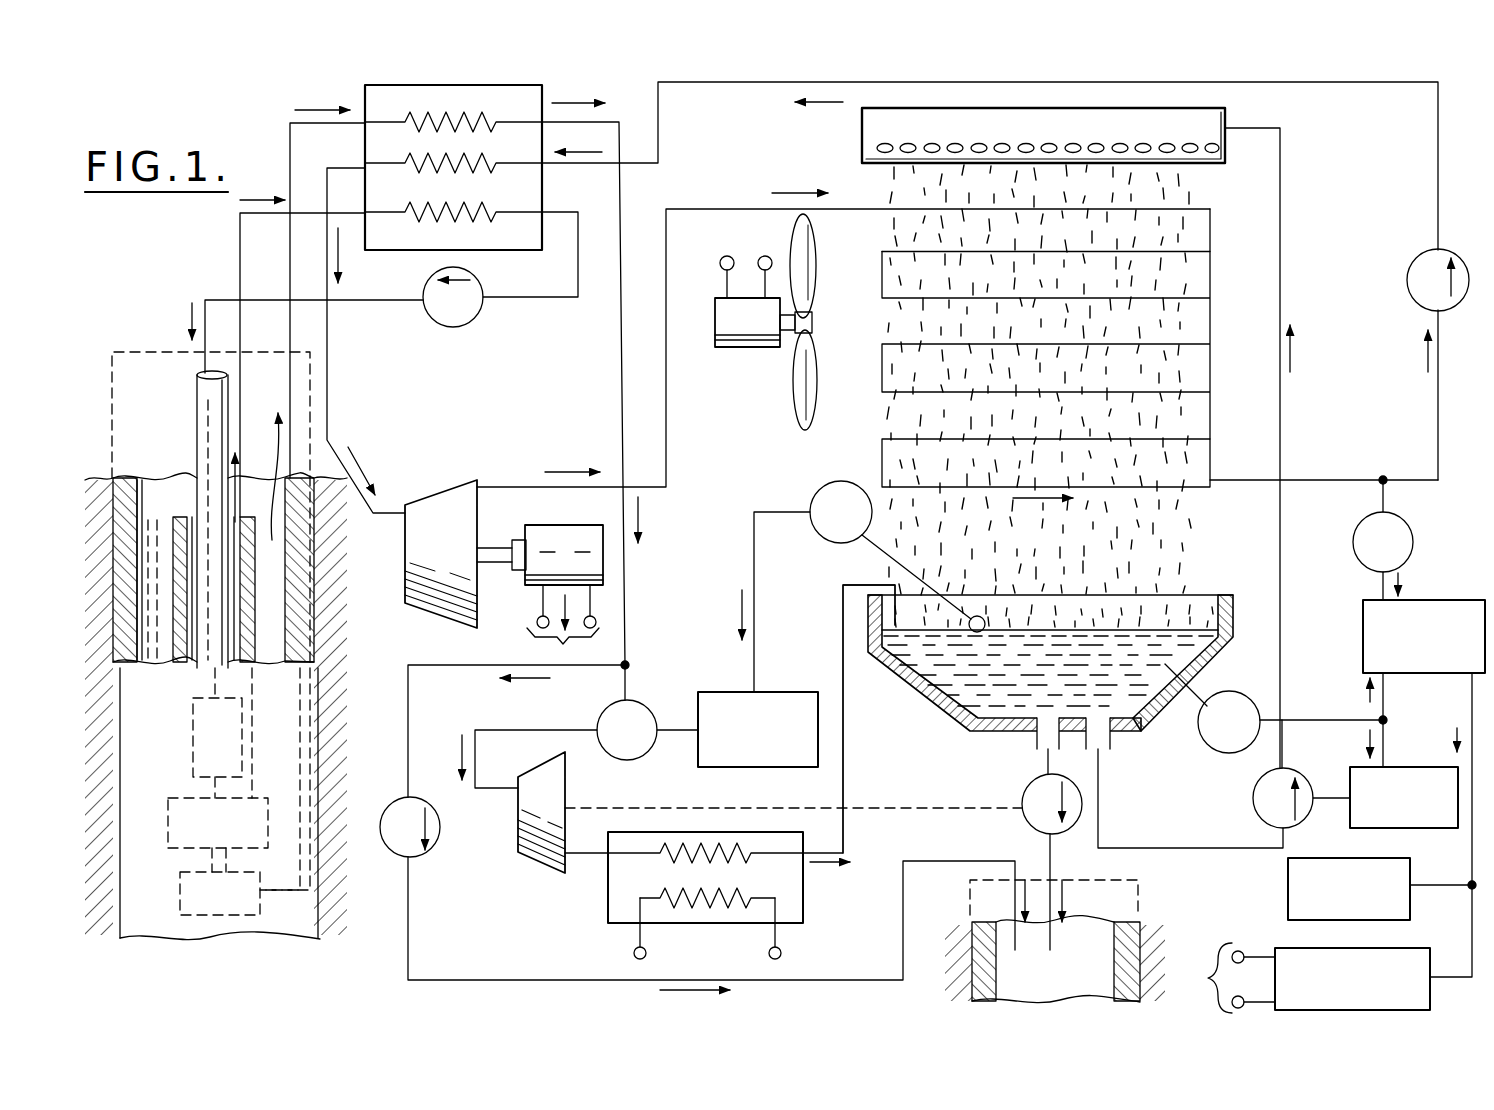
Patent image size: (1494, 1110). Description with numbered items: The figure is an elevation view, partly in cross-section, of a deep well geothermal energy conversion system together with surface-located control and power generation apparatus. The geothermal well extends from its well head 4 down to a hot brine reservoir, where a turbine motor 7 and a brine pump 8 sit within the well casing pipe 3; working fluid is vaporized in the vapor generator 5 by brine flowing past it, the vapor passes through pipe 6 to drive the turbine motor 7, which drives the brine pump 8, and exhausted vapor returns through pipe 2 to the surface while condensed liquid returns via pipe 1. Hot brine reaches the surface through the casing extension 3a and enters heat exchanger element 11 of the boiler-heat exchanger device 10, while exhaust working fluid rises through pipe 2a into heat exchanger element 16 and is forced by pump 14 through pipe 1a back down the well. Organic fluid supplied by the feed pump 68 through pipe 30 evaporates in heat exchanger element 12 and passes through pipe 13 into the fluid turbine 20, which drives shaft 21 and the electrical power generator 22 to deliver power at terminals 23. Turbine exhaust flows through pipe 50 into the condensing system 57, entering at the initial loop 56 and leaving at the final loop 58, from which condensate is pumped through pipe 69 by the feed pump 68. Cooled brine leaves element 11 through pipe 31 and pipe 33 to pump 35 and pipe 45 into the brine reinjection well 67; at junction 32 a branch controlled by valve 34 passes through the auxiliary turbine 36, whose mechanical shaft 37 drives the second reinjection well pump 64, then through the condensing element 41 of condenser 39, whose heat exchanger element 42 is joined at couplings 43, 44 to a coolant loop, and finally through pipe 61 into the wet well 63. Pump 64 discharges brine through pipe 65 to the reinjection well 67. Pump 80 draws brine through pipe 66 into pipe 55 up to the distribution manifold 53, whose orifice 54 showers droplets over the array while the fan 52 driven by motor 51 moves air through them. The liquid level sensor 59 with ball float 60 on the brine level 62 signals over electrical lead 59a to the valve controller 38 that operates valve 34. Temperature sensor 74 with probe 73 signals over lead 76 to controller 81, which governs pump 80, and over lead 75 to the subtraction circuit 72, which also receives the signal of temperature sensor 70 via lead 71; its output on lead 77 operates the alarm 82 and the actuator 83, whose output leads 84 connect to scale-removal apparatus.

The pipe 1 is at (197, 410).
The pipe 2 is at (178, 508).
The well casing pipe 3 is at (280, 514).
The pipe 1a is at (208, 300).
The pipe 2a is at (240, 260).
The well casing extension 3a is at (290, 174).
The well head 4 is at (112, 410).
The vapor generator 5 is at (193, 752).
The pipe 6 is at (214, 795).
The turbine motor 7 is at (168, 832).
The brine pump 8 is at (180, 902).
The boiler-heat exchanger device 10 is at (544, 252).
The heat exchanger element 11 is at (490, 120).
The heat exchanger element 12 is at (490, 165).
The heat exchanger element 16 is at (490, 208).
The pipe 13 is at (330, 347).
The pump 14 is at (476, 318).
The fluid turbine 20 is at (405, 556).
The shaft 21 is at (494, 548).
The electrical power generator 22 is at (575, 525).
The terminals 23 is at (563, 626).
The pipe 30 is at (658, 130).
The pipe 31 is at (620, 210).
The junction 32 is at (629, 665).
The pipe 33 is at (445, 668).
The valve 34 is at (604, 716).
The pump 35 is at (432, 855).
The auxiliary turbine 36 is at (566, 798).
The mechanical shaft 37 is at (700, 808).
The valve controller 38 is at (790, 692).
The condenser 39 is at (608, 908).
The condensing element 41 is at (660, 856).
The heat exchanger element 42 is at (748, 900).
The coupling 43 is at (634, 956).
The coupling 44 is at (781, 955).
The pipe 45 is at (482, 980).
The pipe 50 is at (745, 209).
The motor 51 is at (740, 348).
The fan 52 is at (792, 420).
The distribution manifold 53 is at (862, 136).
The orifice 54 is at (1215, 160).
The pipe 55 is at (1282, 140).
The initial loop 56 is at (1212, 240).
The condensing system 57 is at (1254, 326).
The final loop 58 is at (880, 457).
The liquid level sensor 59 is at (818, 492).
The electrical lead 59a is at (754, 542).
The ball float 60 is at (987, 622).
The pipe 61 is at (860, 585).
The brine level 62 is at (1218, 597).
The wet well 63 is at (925, 700).
The second reinjection well pump 64 is at (1022, 786).
The pipe 65 is at (1051, 864).
The pipe 66 is at (1099, 806).
The brine reinjection well 67 is at (1110, 920).
The feed pump 68 is at (1408, 278).
The pipe 69 is at (1345, 480).
The temperature sensor 70 is at (1410, 530).
The electrical lead 71 is at (1381, 590).
The subtraction circuit 72 is at (1437, 600).
The probe 73 is at (1190, 688).
The temperature sensor 74 is at (1205, 750).
The electrical lead 75 is at (1386, 708).
The electrical lead 76 is at (1386, 758).
The electrical lead 77 is at (1472, 730).
The pump 80 is at (1253, 798).
The controller 81 is at (1415, 828).
The alarm 82 is at (1288, 889).
The actuator 83 is at (1420, 948).
The output leads 84 is at (1223, 978).